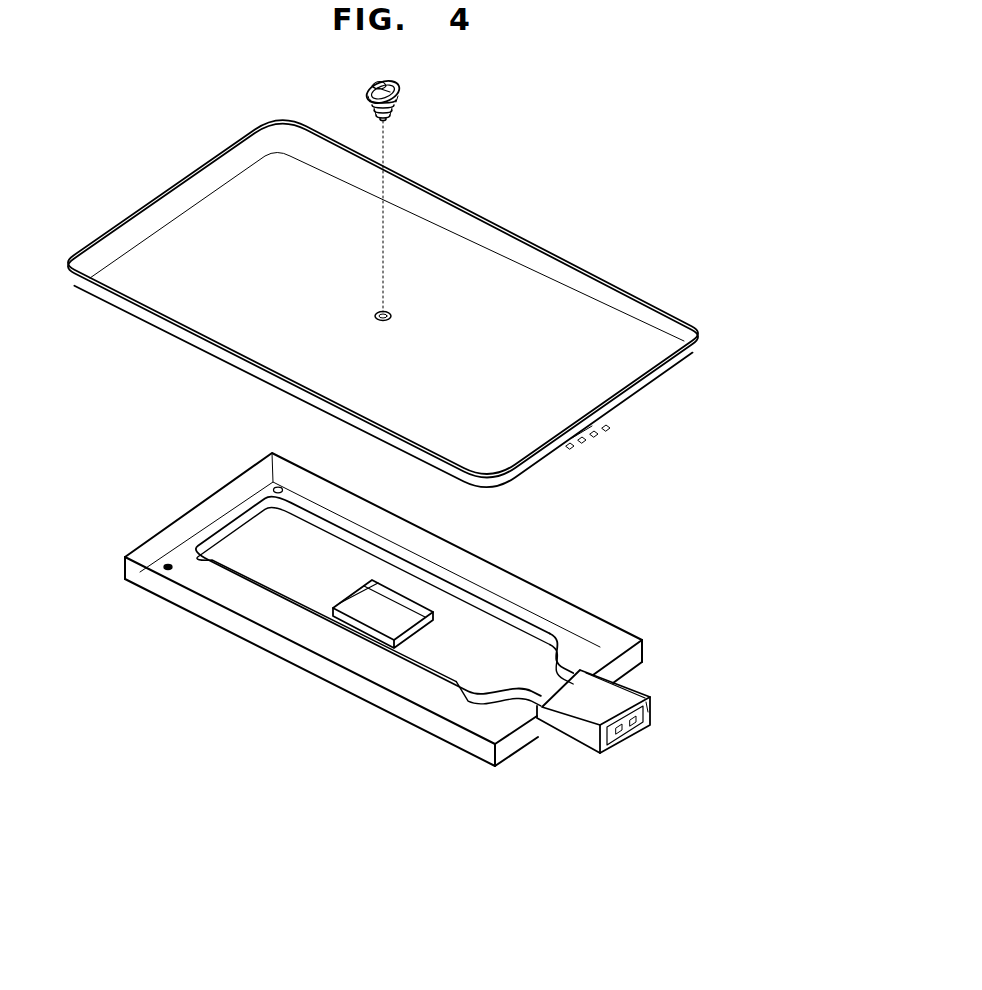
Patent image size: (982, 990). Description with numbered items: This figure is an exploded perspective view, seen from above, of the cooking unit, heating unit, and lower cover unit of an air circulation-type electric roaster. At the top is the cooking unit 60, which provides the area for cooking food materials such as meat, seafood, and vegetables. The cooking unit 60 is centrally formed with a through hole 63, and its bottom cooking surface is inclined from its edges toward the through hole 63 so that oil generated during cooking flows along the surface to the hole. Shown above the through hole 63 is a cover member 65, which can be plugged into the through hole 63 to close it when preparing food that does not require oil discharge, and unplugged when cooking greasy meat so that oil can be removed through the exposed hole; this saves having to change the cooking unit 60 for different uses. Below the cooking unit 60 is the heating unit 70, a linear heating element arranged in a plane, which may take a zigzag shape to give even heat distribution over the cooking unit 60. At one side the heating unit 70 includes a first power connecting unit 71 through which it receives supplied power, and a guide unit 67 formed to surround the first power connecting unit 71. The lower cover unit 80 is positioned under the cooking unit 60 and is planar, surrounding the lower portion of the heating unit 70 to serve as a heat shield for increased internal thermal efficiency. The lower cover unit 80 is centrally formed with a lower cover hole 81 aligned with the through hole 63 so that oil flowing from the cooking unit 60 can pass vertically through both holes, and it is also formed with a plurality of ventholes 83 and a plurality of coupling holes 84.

The cooking unit 60 is at (563, 277).
The through hole 63 is at (391, 308).
The cover member 65 is at (402, 88).
The guide unit 67 is at (630, 692).
The heating unit 70 is at (530, 627).
The first power connecting unit 71 is at (643, 735).
The lower cover unit 80 is at (207, 500).
The lower cover hole 81 is at (393, 615).
The ventholes 83 is at (274, 486).
The coupling holes 84 is at (164, 564).